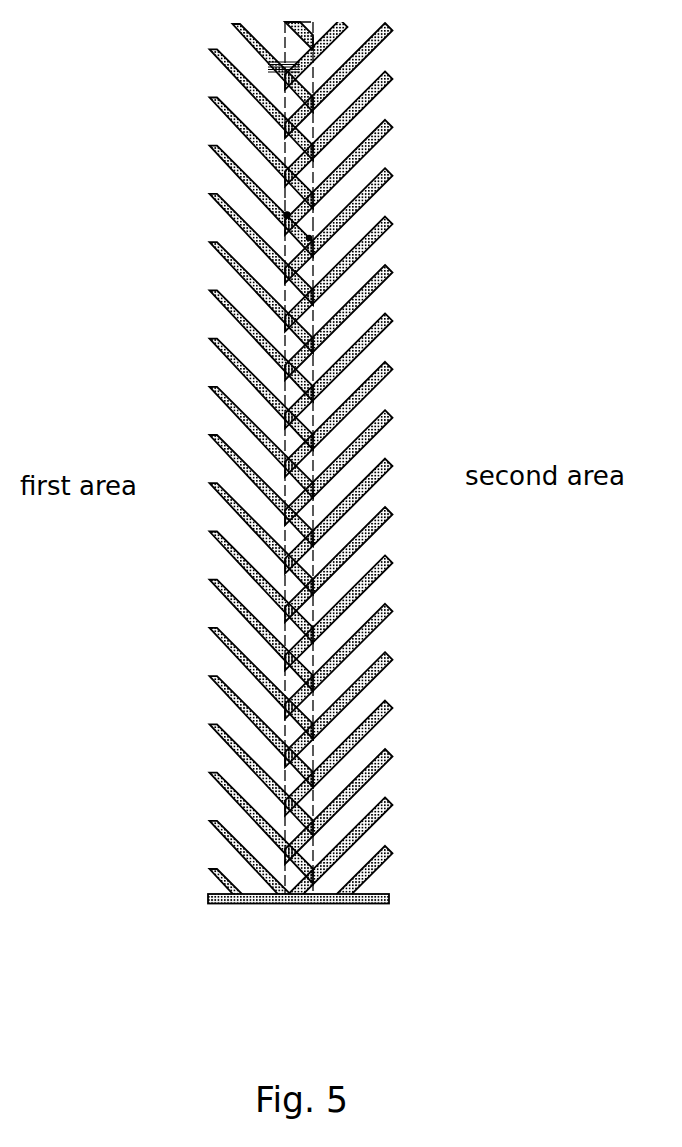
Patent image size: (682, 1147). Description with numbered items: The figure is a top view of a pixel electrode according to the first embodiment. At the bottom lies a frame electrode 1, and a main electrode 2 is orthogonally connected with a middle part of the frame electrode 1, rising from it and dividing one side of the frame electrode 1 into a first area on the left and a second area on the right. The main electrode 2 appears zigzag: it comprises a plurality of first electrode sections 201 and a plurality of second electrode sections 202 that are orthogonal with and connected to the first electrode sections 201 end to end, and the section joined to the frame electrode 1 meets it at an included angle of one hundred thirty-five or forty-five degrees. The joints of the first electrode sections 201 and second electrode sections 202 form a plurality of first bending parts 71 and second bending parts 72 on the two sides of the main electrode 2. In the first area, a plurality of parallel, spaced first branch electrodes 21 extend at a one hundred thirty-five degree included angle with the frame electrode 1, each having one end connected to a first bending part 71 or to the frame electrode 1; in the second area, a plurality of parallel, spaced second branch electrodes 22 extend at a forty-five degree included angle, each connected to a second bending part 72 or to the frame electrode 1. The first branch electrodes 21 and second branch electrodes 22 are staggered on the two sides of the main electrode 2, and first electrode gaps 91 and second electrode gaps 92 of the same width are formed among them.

The frame electrode 1 is at (300, 898).
The main electrode 2 is at (383, 458).
The first branch electrodes 21 is at (235, 499).
The second branch electrodes 22 is at (371, 481).
The first electrode sections 201 is at (312, 232).
The second electrode sections 202 is at (290, 211).
The first bending parts 71 is at (287, 215).
The second bending parts 72 is at (309, 238).
The first electrode gaps 91 is at (252, 449).
The second electrode gaps 92 is at (352, 470).